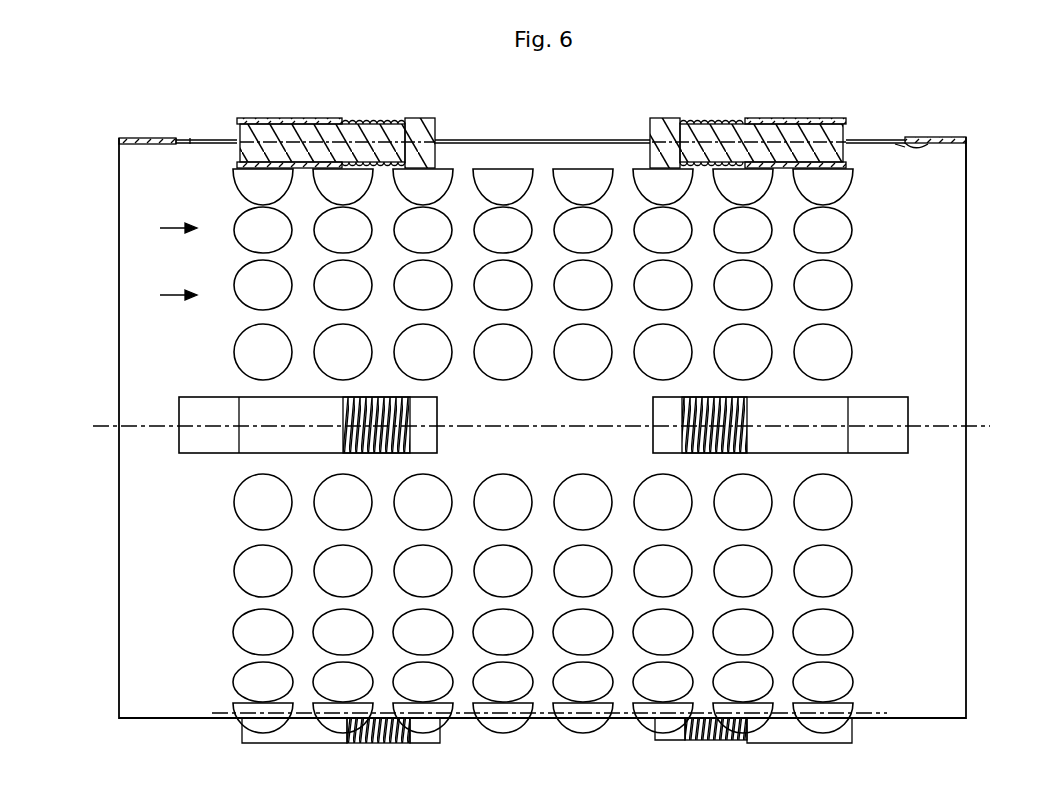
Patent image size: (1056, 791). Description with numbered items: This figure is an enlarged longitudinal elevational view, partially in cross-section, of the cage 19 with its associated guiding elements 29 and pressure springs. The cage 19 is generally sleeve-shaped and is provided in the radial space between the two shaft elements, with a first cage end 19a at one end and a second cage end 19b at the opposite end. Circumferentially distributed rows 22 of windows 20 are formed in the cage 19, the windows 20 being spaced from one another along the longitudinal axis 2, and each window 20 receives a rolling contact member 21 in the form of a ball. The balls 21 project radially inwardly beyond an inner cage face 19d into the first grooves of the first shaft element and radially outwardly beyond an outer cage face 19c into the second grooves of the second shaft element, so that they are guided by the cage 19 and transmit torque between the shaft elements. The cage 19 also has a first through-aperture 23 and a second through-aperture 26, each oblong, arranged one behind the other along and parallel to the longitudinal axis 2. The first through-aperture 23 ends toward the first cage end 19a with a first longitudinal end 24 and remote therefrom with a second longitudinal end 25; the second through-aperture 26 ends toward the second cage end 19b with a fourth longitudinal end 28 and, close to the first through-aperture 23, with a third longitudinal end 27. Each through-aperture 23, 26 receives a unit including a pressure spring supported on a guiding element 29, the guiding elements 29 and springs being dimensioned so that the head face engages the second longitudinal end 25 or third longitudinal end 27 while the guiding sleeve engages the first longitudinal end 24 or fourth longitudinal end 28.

The longitudinal axis 2 is at (135, 426).
The cage 19 is at (943, 192).
The first cage end 19a is at (117, 140).
The second cage end 19b is at (965, 158).
The outer cage face 19c is at (928, 137).
The inner cage face 19d is at (933, 140).
The window 20 is at (245, 297).
The rolling contact member 21 is at (255, 280).
The row of windows 22 is at (163, 267).
The first through-aperture 23 is at (203, 140).
The first longitudinal end 24 is at (188, 137).
The second longitudinal end 25 is at (410, 118).
The second through-aperture 26 is at (883, 138).
The third longitudinal end 27 is at (658, 137).
The fourth longitudinal end 28 is at (898, 145).
The guiding element 29 is at (310, 140).